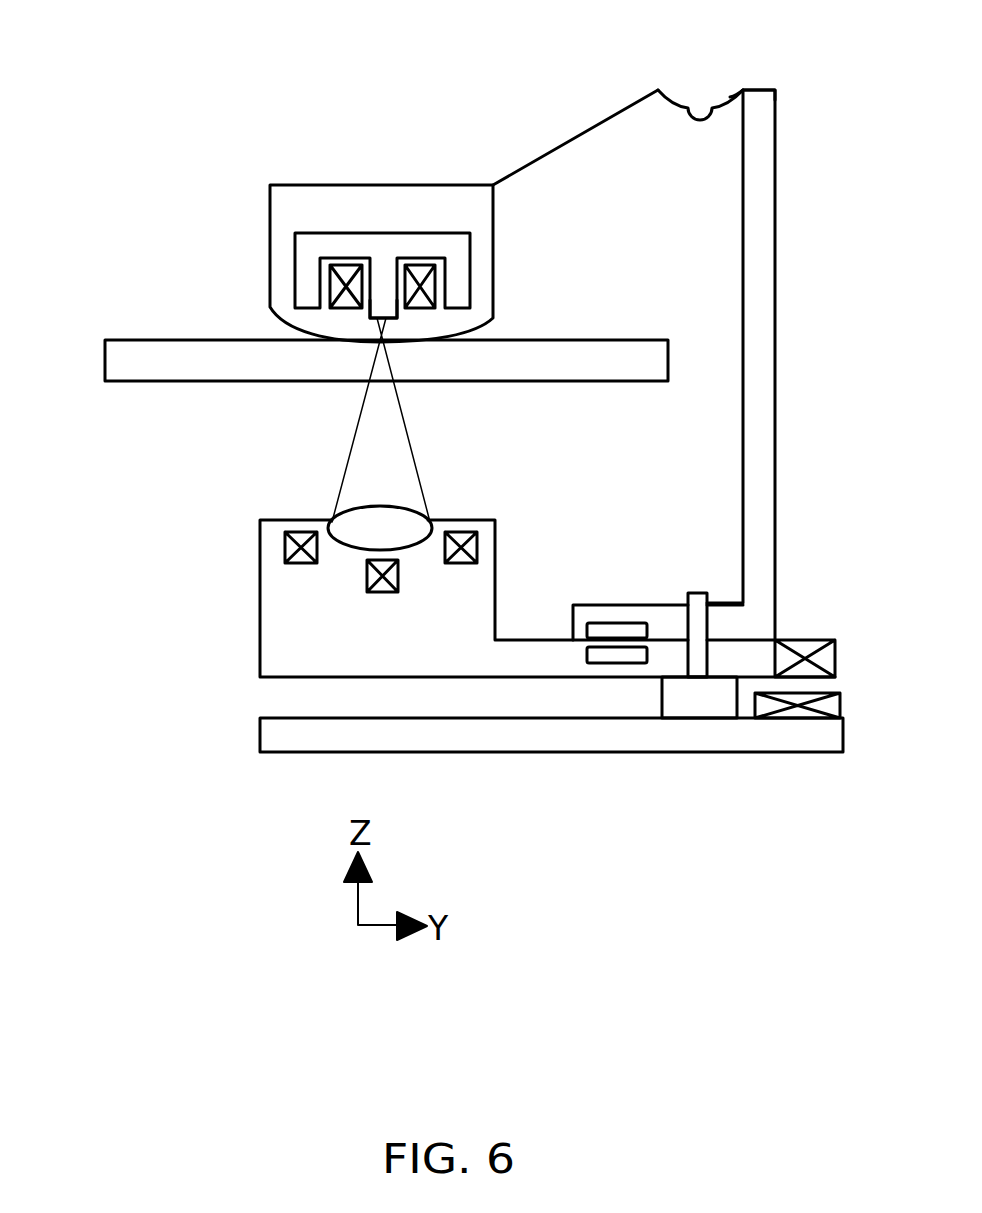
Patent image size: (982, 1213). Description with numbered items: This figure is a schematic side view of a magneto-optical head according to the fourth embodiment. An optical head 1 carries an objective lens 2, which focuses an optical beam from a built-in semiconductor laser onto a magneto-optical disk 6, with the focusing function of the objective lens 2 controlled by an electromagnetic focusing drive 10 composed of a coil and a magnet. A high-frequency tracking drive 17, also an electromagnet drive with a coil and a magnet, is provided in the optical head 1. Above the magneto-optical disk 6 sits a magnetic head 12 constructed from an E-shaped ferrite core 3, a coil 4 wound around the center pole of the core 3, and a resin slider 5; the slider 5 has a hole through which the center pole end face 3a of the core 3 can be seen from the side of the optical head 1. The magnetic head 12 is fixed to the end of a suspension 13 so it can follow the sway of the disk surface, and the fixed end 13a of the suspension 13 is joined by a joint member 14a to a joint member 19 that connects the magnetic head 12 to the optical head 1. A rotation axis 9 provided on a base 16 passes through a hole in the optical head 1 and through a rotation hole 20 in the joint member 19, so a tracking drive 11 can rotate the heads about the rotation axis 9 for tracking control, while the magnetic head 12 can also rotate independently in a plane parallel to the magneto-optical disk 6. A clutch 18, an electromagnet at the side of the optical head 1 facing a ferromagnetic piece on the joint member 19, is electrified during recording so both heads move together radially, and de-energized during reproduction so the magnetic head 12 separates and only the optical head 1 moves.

The optical head 1 is at (283, 636).
The objective lens 2 is at (343, 521).
The core 3 is at (306, 247).
The center pole end face 3a is at (375, 336).
The coil 4 is at (335, 290).
The slider 5 is at (465, 318).
The magneto-optical disk 6 is at (118, 356).
The rotation axis 9 is at (688, 600).
The focusing drive 10 is at (288, 548).
The tracking drive 11 is at (835, 705).
The magnetic head 12 is at (546, 155).
The suspension 13 is at (690, 105).
The fixed end of the suspension 13a is at (748, 93).
The joint member 14a is at (757, 90).
The base 16 is at (268, 732).
The high-frequency tracking drive 17 is at (370, 575).
The clutch 18 is at (633, 660).
The joint member 19 is at (757, 343).
The rotation hole 20 is at (707, 622).